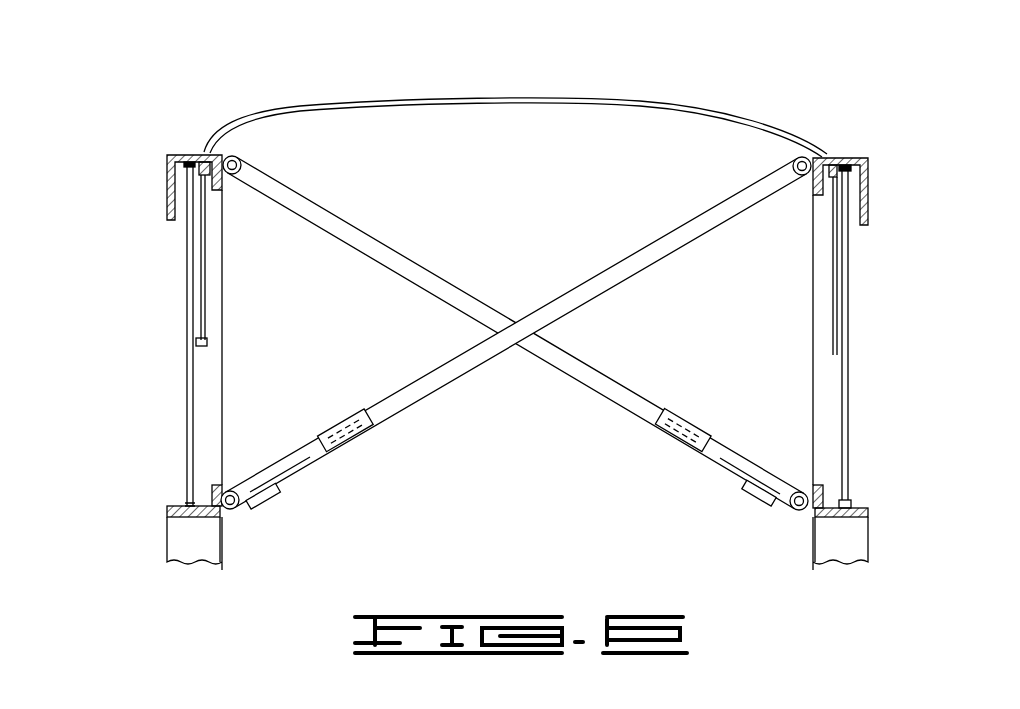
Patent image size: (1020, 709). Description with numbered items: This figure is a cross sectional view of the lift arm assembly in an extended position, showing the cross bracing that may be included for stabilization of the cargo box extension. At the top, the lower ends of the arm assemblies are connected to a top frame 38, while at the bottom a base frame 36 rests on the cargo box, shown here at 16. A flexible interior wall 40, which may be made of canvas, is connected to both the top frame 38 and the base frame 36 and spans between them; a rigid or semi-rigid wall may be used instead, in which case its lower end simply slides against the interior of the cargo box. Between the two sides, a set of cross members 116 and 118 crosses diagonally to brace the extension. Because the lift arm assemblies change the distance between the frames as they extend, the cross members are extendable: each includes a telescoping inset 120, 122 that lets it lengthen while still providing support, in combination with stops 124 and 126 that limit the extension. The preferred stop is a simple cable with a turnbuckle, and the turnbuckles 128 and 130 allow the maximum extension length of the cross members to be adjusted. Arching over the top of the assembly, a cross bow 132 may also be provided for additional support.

The support base 16 is at (167, 545).
The base frame 36 is at (175, 505).
The top frame 38 is at (180, 155).
The flexible interior wall 40 is at (222, 313).
The cross member 116 is at (685, 223).
The cross member 118 is at (362, 228).
The telescoping inset 120 is at (270, 470).
The telescoping inset 122 is at (752, 462).
The stop 124 is at (298, 477).
The stop 126 is at (716, 470).
The turnbuckle 128 is at (262, 510).
The turnbuckle 130 is at (757, 510).
The cross bow 132 is at (630, 102).